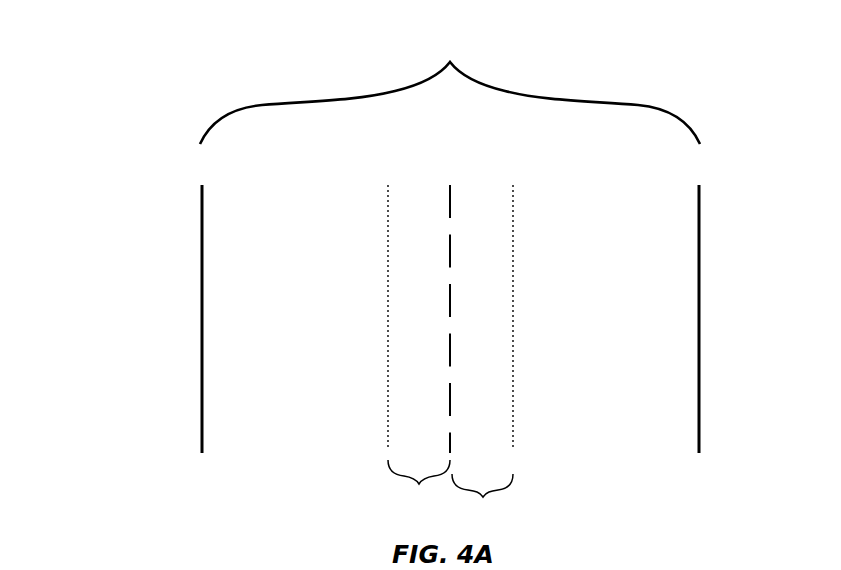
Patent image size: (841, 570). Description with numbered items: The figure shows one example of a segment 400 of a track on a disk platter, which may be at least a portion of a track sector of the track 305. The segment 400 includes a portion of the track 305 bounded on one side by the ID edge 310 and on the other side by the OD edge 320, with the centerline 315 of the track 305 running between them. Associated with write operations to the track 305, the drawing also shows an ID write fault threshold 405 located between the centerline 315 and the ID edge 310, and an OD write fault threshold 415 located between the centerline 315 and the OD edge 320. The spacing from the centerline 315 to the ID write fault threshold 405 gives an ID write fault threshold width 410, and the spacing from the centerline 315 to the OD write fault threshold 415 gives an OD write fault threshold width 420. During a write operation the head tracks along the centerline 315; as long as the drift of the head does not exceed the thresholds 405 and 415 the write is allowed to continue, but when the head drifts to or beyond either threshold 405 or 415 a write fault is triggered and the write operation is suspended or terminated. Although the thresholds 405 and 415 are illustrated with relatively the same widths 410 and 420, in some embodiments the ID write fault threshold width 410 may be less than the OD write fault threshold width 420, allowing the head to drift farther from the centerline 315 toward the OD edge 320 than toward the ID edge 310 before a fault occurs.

The segment 400 is at (93, 52).
The track 305 is at (450, 90).
The ID edge 310 is at (202, 303).
The OD edge 320 is at (699, 302).
The centerline 315 is at (450, 258).
The ID write fault threshold 405 is at (388, 390).
The OD write fault threshold 415 is at (513, 310).
The ID write fault threshold width 410 is at (419, 485).
The OD write fault threshold width 420 is at (482, 498).